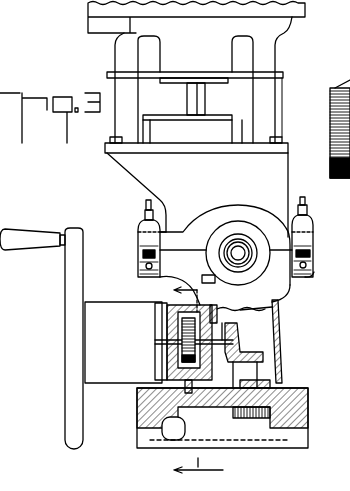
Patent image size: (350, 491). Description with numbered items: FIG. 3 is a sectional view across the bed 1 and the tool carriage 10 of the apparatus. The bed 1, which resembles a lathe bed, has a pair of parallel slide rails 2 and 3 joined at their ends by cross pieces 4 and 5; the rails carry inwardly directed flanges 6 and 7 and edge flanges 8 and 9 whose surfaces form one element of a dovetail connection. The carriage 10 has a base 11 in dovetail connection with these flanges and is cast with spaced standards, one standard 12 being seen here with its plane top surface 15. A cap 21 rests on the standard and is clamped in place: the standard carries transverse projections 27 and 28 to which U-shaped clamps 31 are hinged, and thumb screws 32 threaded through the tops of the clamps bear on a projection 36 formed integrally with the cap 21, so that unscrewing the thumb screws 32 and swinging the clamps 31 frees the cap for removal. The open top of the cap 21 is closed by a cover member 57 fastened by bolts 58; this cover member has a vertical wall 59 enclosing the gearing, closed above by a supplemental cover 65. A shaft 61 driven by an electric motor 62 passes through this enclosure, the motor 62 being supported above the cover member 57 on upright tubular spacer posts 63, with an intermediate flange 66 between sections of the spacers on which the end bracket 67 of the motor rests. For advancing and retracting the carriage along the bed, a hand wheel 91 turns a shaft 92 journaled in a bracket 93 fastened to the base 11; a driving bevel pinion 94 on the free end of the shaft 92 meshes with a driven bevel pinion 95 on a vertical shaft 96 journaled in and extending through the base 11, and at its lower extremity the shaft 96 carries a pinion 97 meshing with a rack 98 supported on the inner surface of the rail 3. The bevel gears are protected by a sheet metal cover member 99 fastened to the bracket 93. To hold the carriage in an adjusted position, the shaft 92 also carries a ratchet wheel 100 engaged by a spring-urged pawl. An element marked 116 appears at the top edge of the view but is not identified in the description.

The frame 116 is at (29, 4).
The electric motor 62 is at (284, 34).
The upright tubular spacer posts 63 is at (122, 106).
The end bracket 67 is at (217, 53).
The intermediate flange 66 is at (107, 77).
The shaft 61 is at (202, 103).
The vertical wall 59 is at (230, 135).
The supplemental cover 65 is at (248, 110).
The screws or bolts 58 is at (108, 140).
The cap casting 21 is at (287, 177).
The cover member 57 is at (130, 156).
The tool carriage 10 is at (185, 183).
The plane surfaces 15 is at (188, 230).
The transverse projection 28 is at (166, 278).
The cross piece 5 is at (198, 385).
The standard 12 is at (265, 303).
The driving bevel pinion 94 is at (262, 320).
The U-shaped clamps 31 is at (138, 238).
The clamping thumb screws 32 is at (144, 207).
The projection 36 is at (141, 254).
The transverse projection 27 is at (305, 277).
The hand wheel 91 is at (78, 318).
The ratchet wheel 100 is at (175, 320).
The shaft 92 is at (175, 348).
The bracket 93 is at (208, 370).
The driven bevel pinion 95 is at (262, 342).
The vertical shaft 96 is at (258, 347).
The edge flange 8 is at (268, 380).
The sheet metal cover member 99 is at (292, 348).
The base 11 is at (280, 382).
The bed 1 is at (321, 433).
The inwardly directed flange 7 is at (182, 440).
The cross piece 4 is at (297, 438).
The pinion 97 is at (245, 418).
The inwardly directed flange 6 is at (270, 418).
The edge flange 9 is at (140, 390).
The slide rail 2 is at (140, 415).
The slide rail 3 is at (310, 405).
The rack 98 is at (310, 420).